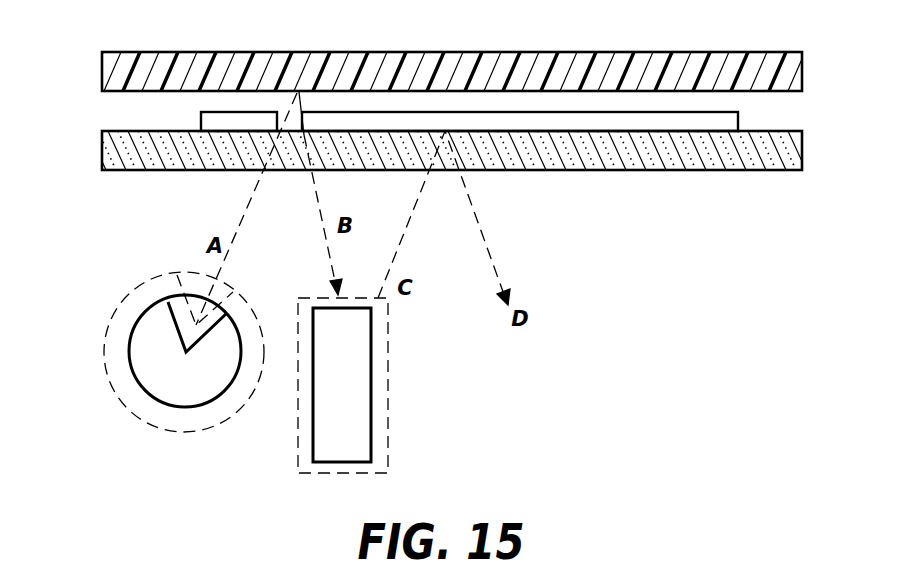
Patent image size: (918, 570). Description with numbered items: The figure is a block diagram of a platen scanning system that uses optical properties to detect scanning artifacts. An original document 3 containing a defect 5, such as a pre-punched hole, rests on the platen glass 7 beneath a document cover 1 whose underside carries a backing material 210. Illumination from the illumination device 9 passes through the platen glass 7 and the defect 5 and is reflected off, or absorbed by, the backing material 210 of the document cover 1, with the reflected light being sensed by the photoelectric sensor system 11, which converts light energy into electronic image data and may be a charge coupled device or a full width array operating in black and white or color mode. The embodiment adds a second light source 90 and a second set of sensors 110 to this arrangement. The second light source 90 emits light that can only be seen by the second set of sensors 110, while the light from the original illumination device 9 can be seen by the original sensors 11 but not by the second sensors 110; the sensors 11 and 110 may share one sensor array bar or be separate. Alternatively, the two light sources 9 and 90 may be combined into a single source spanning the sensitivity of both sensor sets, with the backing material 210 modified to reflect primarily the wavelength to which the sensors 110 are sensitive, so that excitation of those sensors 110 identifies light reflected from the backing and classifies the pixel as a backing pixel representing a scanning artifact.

The document cover 1 is at (753, 52).
The original document 3 is at (738, 118).
The defect 5 is at (299, 92).
The platen glass 7 is at (763, 170).
The illumination device 9 is at (182, 407).
The second light source 90 is at (124, 408).
The photoelectric sensor system 11 is at (371, 420).
The second set of sensors 110 is at (388, 377).
The backing material 210 is at (130, 91).